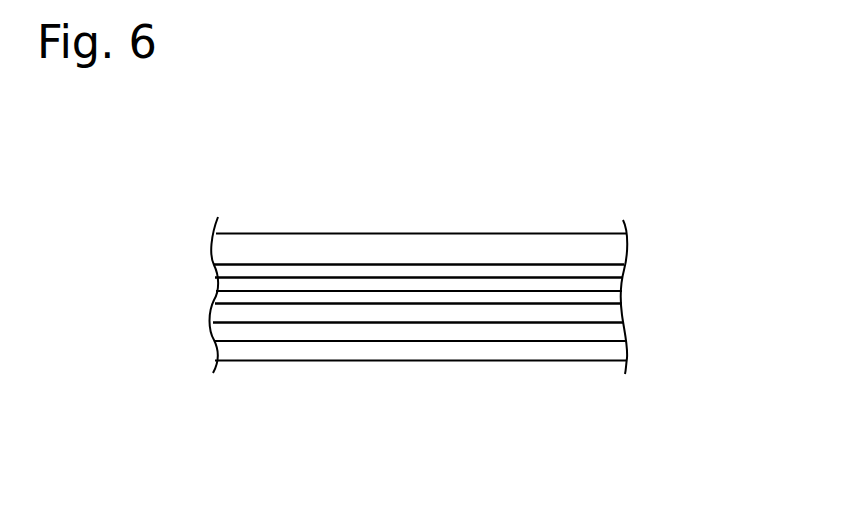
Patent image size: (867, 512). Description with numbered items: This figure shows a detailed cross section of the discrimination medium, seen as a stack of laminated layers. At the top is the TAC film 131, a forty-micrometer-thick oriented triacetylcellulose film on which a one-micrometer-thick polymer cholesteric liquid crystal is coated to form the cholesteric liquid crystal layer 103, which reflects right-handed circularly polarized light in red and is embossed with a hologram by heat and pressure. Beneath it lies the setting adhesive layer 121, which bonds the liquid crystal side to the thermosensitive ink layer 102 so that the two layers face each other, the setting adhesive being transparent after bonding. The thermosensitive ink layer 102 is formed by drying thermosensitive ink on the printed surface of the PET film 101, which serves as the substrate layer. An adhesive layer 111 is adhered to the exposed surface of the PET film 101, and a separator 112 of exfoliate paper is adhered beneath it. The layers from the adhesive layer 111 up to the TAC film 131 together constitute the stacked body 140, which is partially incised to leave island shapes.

The stacked body 140 is at (732, 175).
The TAC film 131 is at (597, 242).
The cholesteric liquid crystal layer 103 is at (626, 279).
The setting adhesive layer 121 is at (626, 293).
The thermosensitive ink layer 102 is at (627, 306).
The PET film 101 is at (623, 308).
The adhesive layer 111 is at (623, 332).
The separator 112 is at (623, 352).